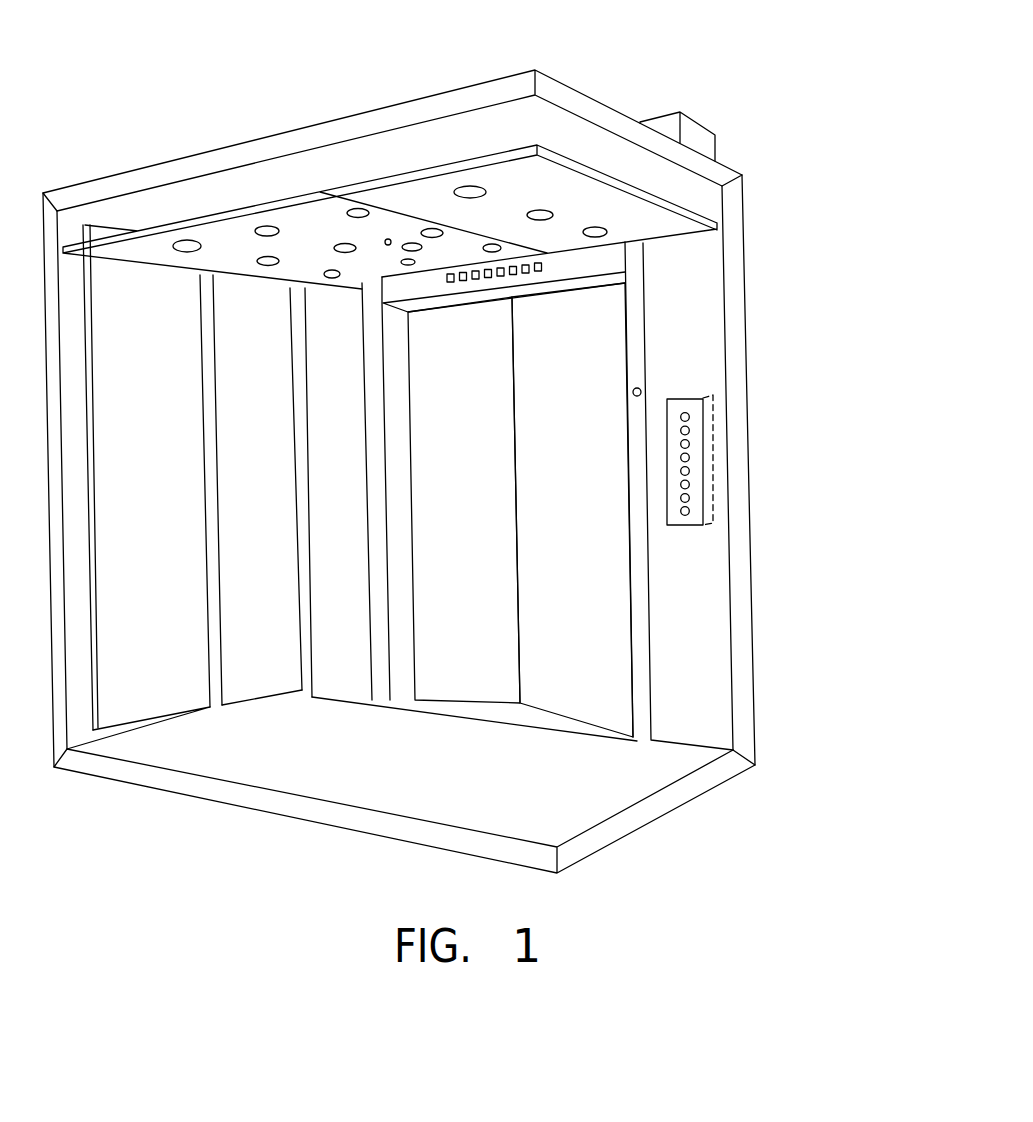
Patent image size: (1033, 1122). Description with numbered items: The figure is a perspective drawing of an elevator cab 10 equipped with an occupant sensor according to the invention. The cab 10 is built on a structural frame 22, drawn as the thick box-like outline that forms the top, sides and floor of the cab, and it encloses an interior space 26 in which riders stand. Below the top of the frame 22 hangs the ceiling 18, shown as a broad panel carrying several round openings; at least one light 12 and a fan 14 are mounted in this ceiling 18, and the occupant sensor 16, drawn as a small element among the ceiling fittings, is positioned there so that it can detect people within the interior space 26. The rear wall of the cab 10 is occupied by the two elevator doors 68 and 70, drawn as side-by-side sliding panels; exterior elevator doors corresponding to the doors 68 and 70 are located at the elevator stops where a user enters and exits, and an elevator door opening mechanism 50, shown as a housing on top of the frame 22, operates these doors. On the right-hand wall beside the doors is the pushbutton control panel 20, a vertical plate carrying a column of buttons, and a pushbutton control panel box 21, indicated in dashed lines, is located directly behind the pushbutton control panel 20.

The elevator cab 10 is at (182, 57).
The light 12 is at (588, 237).
The fan 14 is at (410, 247).
The occupant sensor 16 is at (388, 239).
The ceiling 18 is at (325, 216).
The pushbutton control panel 20 is at (705, 499).
The pushbutton control panel box 21 is at (708, 400).
The structural frame 22 is at (500, 87).
The interior space 26 is at (606, 744).
The elevator door opening mechanism 50 is at (667, 112).
The elevator door 68 is at (480, 550).
The elevator door 70 is at (585, 550).